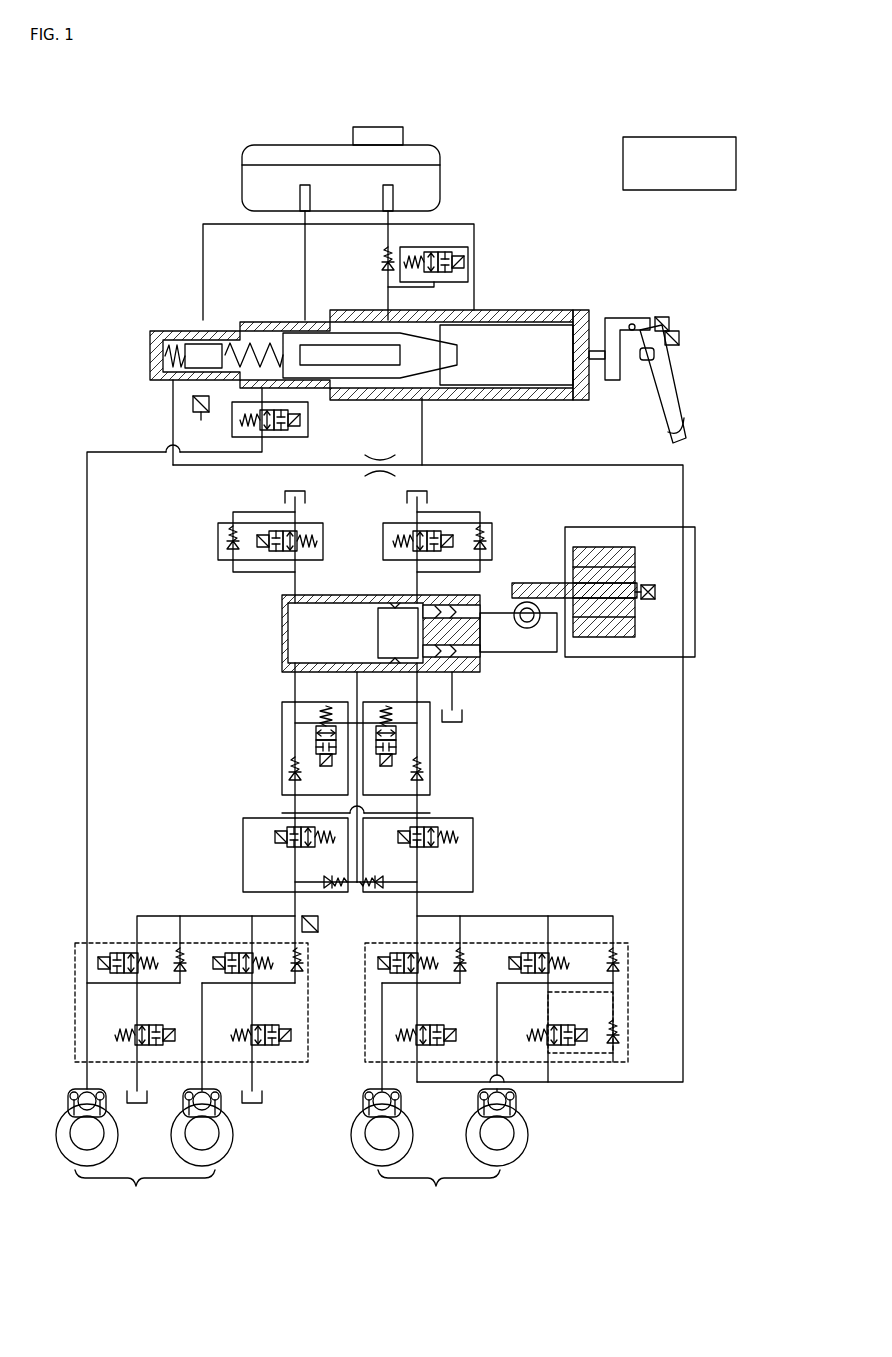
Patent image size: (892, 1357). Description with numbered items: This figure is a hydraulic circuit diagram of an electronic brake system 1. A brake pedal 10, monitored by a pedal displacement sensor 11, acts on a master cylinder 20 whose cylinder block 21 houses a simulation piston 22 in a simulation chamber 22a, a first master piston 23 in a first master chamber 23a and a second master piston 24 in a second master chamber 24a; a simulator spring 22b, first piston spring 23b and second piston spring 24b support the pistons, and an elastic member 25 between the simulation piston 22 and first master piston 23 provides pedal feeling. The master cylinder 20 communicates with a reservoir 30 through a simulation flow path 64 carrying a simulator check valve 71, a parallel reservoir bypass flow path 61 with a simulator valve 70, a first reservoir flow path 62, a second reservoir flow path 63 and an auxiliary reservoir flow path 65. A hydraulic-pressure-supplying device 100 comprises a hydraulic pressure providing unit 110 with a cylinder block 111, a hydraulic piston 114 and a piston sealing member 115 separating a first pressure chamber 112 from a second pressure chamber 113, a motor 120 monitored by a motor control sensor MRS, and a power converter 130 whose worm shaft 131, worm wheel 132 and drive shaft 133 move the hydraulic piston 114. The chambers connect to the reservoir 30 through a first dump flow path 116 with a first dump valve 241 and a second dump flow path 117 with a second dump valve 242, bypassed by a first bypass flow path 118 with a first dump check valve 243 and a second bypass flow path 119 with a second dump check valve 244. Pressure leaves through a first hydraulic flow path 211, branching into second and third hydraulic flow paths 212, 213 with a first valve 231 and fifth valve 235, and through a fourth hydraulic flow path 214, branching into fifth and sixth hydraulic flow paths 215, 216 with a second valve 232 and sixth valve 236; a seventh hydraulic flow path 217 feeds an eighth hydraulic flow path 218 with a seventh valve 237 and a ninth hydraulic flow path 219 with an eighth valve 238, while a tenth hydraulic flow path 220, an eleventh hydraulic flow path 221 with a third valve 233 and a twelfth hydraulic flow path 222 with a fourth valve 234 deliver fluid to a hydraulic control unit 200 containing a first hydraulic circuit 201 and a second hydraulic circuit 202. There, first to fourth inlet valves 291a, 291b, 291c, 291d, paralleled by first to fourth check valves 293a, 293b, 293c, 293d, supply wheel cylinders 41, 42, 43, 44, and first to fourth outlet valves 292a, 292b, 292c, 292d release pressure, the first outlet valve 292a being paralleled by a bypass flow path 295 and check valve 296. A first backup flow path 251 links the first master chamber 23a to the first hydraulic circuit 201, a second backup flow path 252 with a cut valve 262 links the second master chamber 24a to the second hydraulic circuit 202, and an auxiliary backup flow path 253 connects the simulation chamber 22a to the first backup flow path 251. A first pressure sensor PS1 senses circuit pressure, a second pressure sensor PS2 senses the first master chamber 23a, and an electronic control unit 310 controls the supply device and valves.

The electronic brake system 1 is at (542, 147).
The brake pedal 10 is at (652, 376).
The pedal displacement sensor 11 is at (662, 316).
The master cylinder 20 is at (350, 348).
The cylinder block 21 is at (152, 356).
The simulation piston 22 is at (560, 330).
The simulation chamber 22a is at (416, 398).
The simulator spring 22b is at (522, 310).
The first master piston 23 is at (327, 344).
The first master chamber 23a is at (280, 321).
The first piston spring 23b is at (251, 342).
The second master piston 24 is at (204, 340).
The second master chamber 24a is at (167, 378).
The second piston spring 24b is at (171, 338).
The elastic member 25 is at (411, 293).
The reservoir 30 is at (242, 150).
The first wheel cylinder 41 is at (521, 1106).
The second wheel cylinder 42 is at (406, 1106).
The third wheel cylinder 43 is at (228, 1106).
The fourth wheel cylinder 44 is at (111, 1106).
The reservoir bypass flow path 61 is at (428, 236).
The reservoir flow path 62 is at (305, 265).
The second reservoir flow path 63 is at (203, 265).
The simulation flow path 64 is at (387, 241).
The auxiliary reservoir flow path 65 is at (476, 232).
The simulator valve 70 is at (449, 282).
The simulator check valve 71 is at (385, 269).
The hydraulic-pressure-supplying device 100 is at (270, 588).
The hydraulic pressure providing unit 110 is at (341, 629).
The cylinder block 111 is at (282, 633).
The first pressure chamber 112 is at (308, 636).
The second pressure chamber 113 is at (436, 672).
The hydraulic piston 114 is at (377, 622).
The piston sealing member 115 is at (395, 602).
The first dump flow path 116 is at (296, 580).
The second dump flow path 117 is at (418, 580).
The first bypass flow path 118 is at (250, 512).
The second bypass flow path 119 is at (480, 512).
The motor 120 is at (642, 526).
The power converter 130 is at (558, 585).
The worm shaft 131 is at (514, 582).
The worm wheel 132 is at (532, 628).
The drive shaft 133 is at (504, 648).
The hydraulic control unit 200 is at (399, 913).
The first hydraulic circuit 201 is at (496, 1057).
The second hydraulic circuit 202 is at (191, 1057).
The first hydraulic flow path 211 is at (289, 686).
The second hydraulic flow path 212 is at (283, 741).
The third hydraulic flow path 213 is at (312, 682).
The fourth hydraulic flow path 214 is at (416, 686).
The fifth hydraulic flow path 215 is at (427, 759).
The sixth hydraulic flow path 216 is at (357, 700).
The seventh hydraulic flow path 217 is at (363, 823).
The eighth hydraulic flow path 218 is at (419, 900).
The ninth hydraulic flow path 219 is at (292, 900).
The tenth hydraulic flow path 220 is at (356, 772).
The eleventh hydraulic flow path 221 is at (431, 861).
The twelfth hydraulic flow path 222 is at (290, 861).
The first valve 231 is at (289, 782).
The second valve 232 is at (423, 785).
The third valve 233 is at (459, 824).
The fourth valve 234 is at (272, 824).
The fifth valve 235 is at (297, 705).
The sixth valve 236 is at (397, 738).
The seventh valve 237 is at (374, 874).
The eighth valve 238 is at (334, 886).
The first dump valve 241 is at (295, 526).
The second dump valve 242 is at (406, 524).
The first dump check valve 243 is at (227, 538).
The second dump check valve 244 is at (480, 554).
The first backup flow path 251 is at (572, 463).
The second backup flow path 252 is at (128, 452).
The auxiliary backup flow path 253 is at (423, 437).
The cut valve 262 is at (274, 436).
The first inlet valve 291a is at (538, 952).
The second inlet valve 291b is at (404, 952).
The third inlet valve 291c is at (238, 952).
The fourth inlet valve 291d is at (123, 952).
The first outlet valve 292a is at (562, 1025).
The second outlet valve 292b is at (429, 1025).
The third outlet valve 292c is at (264, 1025).
The fourth outlet valve 292d is at (149, 1025).
The first check valve 293a is at (619, 962).
The second check valve 293b is at (456, 954).
The third check valve 293c is at (302, 963).
The fourth check valve 293d is at (176, 942).
The bypass flow path 295 is at (619, 1008).
The check valve 296 is at (619, 1040).
The electronic control unit 310 is at (680, 137).
The first pressure sensor PS1 is at (318, 928).
The second pressure sensor PS2 is at (200, 420).
The motor rotation sensor MRS is at (654, 584).